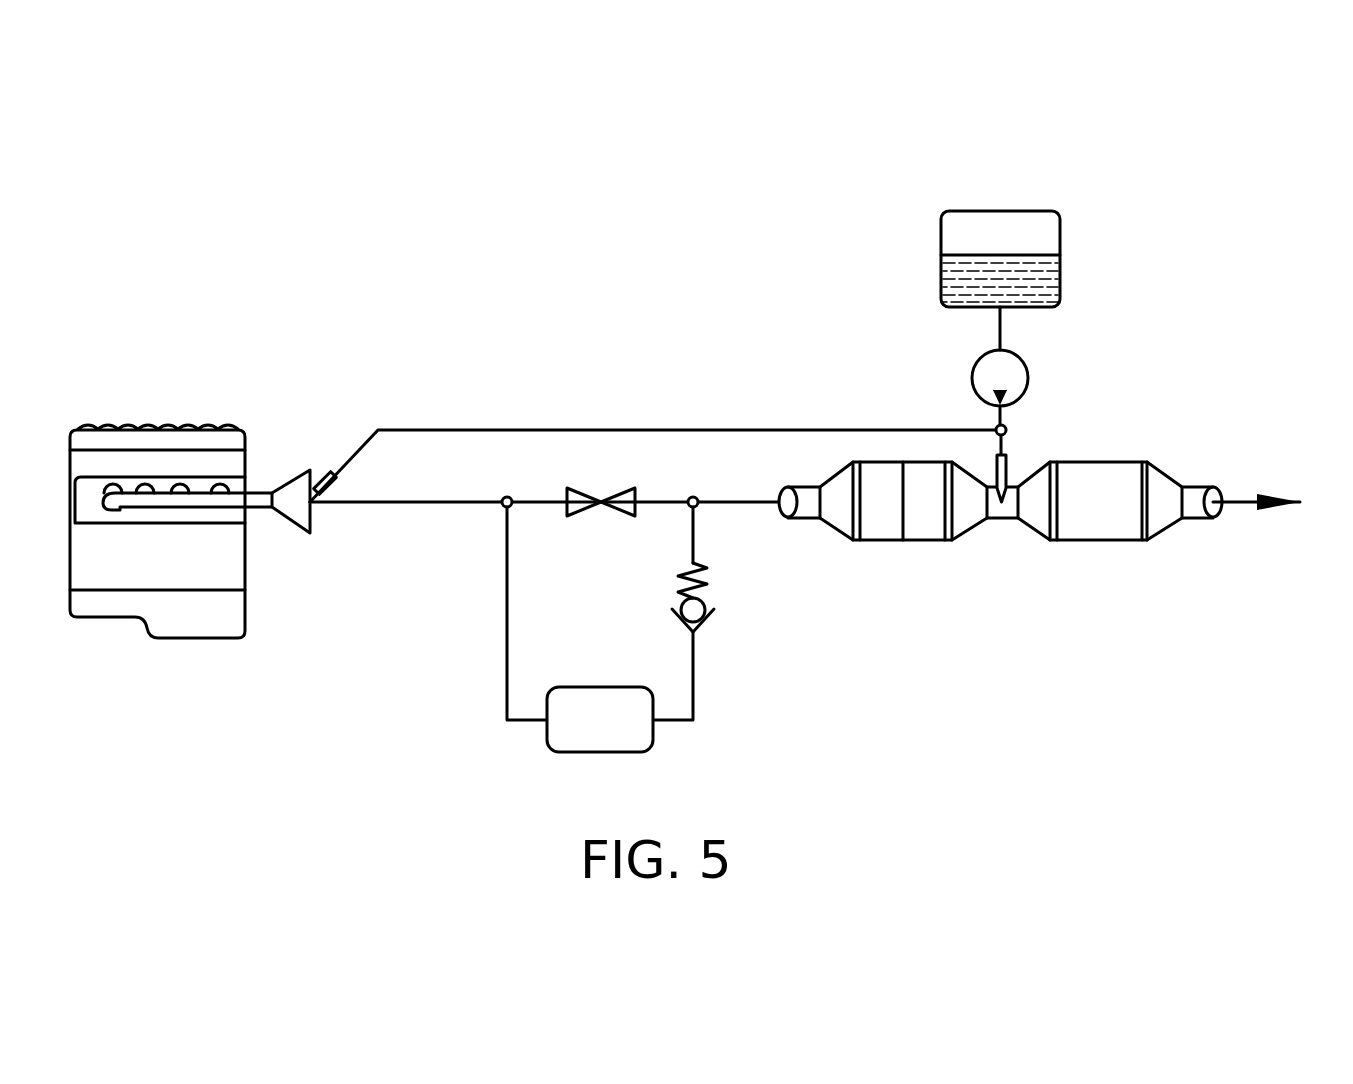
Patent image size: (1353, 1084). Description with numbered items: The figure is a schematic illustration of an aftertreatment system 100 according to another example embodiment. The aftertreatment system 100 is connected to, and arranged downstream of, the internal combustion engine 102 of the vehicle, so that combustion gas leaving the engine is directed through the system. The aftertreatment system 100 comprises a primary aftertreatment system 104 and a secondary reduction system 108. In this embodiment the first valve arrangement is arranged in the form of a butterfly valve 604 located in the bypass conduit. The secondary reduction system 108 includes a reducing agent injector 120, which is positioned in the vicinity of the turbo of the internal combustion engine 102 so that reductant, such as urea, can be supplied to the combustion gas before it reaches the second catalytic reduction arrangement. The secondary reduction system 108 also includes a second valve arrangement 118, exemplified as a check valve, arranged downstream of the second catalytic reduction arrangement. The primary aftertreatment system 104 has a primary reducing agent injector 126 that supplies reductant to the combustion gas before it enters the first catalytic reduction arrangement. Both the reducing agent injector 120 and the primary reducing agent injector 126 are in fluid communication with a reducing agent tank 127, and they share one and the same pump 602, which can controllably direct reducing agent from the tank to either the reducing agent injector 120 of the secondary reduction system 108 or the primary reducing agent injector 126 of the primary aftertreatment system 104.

The aftertreatment system 100 is at (1218, 182).
The internal combustion engine 102 is at (167, 467).
The primary aftertreatment system 104 is at (1140, 424).
The secondary reduction system 108 is at (420, 655).
The second valve arrangement 118 is at (745, 615).
The reducing agent injector 120 is at (325, 475).
The primary reducing agent injector 126 is at (1012, 460).
The reducing agent tank 127 is at (1000, 211).
The pump 602 is at (1023, 362).
The butterfly valve 604 is at (612, 490).